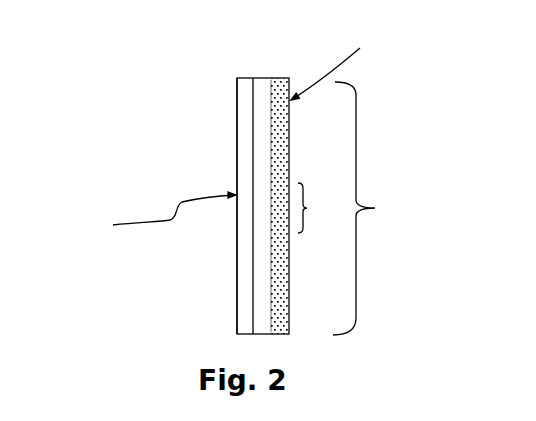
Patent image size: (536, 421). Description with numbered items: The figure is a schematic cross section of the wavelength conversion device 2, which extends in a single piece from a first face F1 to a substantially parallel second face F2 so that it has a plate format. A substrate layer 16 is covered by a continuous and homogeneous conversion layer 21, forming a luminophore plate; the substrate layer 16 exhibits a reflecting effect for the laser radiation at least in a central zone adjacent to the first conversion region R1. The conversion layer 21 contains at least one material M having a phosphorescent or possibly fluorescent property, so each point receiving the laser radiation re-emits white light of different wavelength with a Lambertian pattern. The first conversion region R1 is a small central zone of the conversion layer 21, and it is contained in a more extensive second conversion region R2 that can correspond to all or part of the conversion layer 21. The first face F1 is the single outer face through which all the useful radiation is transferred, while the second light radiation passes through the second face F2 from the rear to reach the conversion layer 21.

The wavelength conversion device 2 is at (290, 63).
The substrate layer 16 is at (247, 170).
The conversion layer 21 is at (265, 112).
The material M is at (285, 285).
The first face F1 is at (341, 61).
The second face F2 is at (156, 217).
The first conversion region R1 is at (320, 208).
The second conversion region R2 is at (376, 208).